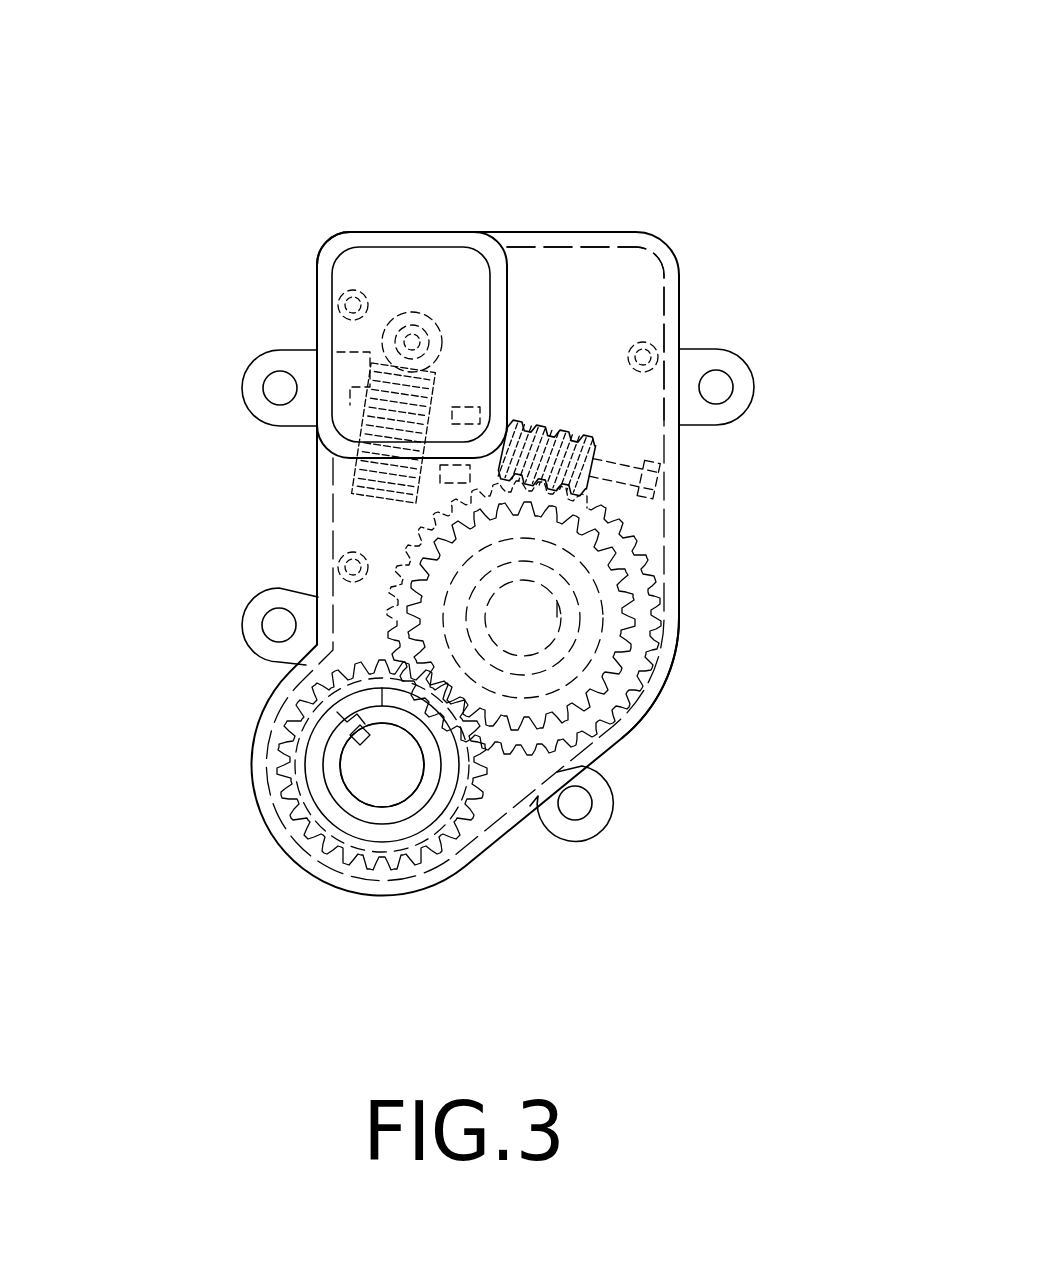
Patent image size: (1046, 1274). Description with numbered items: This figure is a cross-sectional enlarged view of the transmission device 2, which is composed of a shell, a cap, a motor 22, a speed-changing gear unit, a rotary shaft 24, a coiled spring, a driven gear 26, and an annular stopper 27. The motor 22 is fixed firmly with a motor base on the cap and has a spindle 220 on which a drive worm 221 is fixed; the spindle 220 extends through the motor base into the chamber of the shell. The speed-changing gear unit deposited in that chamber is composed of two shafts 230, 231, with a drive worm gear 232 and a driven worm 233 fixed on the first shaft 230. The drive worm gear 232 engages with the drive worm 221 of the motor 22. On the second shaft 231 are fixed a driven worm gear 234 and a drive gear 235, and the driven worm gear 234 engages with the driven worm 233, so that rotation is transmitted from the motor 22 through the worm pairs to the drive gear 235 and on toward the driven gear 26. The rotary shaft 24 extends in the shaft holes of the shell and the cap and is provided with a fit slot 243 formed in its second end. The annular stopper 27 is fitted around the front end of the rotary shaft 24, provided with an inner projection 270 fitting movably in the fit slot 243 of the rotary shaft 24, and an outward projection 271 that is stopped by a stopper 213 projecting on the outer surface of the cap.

The transmission device 2 is at (573, 165).
The motor 22 is at (432, 280).
The drive worm 221 is at (407, 322).
The spindle 220 is at (383, 338).
The drive worm gear 232 is at (360, 413).
The driven worm 233 is at (557, 420).
The shaft 230 is at (600, 462).
The shaft 231 is at (540, 613).
The driven worm gear 234 is at (660, 640).
The drive gear 235 is at (665, 680).
The driven gear 26 is at (473, 833).
The annular stopper 27 is at (322, 780).
The inner projection 270 is at (350, 737).
The outward projection 271 is at (337, 712).
The fit slot 243 is at (367, 740).
The stopper 213 is at (368, 830).
The rotary shaft 24 is at (393, 780).